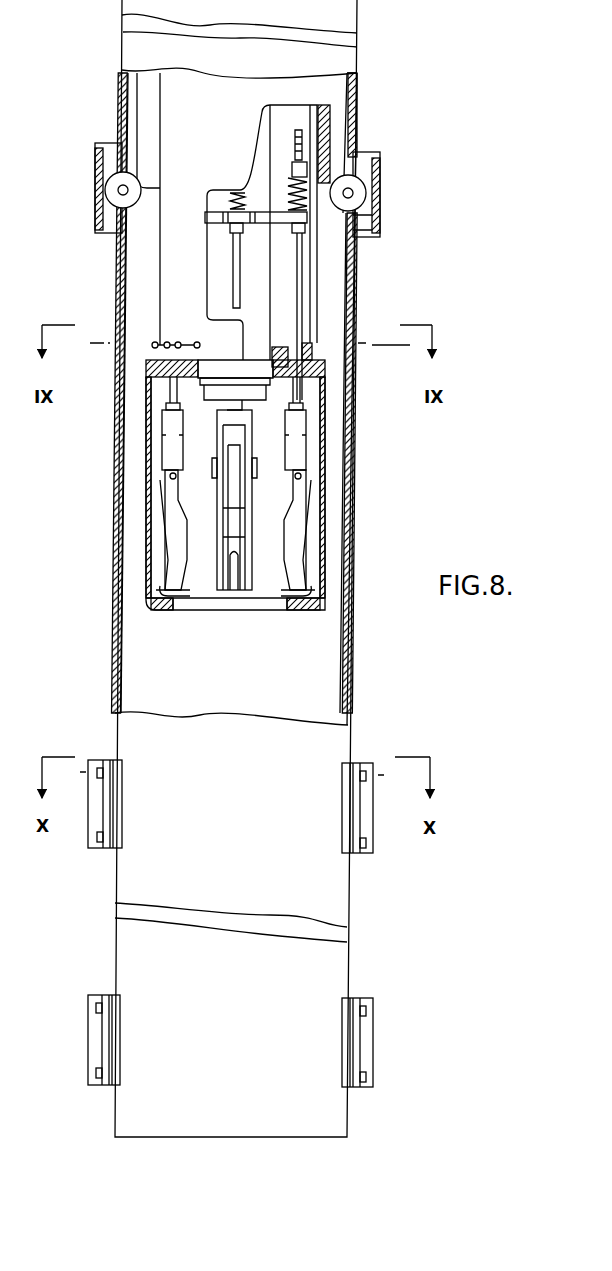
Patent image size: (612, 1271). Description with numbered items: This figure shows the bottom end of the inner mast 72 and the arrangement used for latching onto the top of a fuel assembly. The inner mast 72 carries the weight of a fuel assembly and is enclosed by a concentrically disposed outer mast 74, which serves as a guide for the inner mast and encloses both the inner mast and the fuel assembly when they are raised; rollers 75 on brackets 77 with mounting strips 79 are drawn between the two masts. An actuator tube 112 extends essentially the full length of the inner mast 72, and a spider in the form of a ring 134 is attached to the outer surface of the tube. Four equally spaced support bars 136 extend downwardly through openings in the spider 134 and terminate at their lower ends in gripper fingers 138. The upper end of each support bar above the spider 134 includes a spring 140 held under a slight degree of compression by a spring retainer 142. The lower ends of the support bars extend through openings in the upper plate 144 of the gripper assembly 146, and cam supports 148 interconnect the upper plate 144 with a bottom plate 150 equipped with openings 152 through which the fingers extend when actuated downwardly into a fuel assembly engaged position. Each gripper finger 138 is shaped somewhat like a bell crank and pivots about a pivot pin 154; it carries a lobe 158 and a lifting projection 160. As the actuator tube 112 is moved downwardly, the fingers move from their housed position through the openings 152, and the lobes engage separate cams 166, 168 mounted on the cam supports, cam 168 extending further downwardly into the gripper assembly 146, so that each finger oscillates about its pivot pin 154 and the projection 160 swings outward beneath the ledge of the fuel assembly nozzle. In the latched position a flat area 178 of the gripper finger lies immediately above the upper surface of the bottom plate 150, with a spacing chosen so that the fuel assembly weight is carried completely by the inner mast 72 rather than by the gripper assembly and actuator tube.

The inner mast 72 is at (150, 246).
The outer mast 74 is at (119, 283).
The roller 75 is at (363, 188).
The roller bracket 77 is at (377, 158).
The bracket mounting strip 79 is at (380, 200).
The actuator tube 112 is at (272, 123).
The spider 134 is at (303, 220).
The support bars 136 is at (297, 280).
The gripper fingers 138 is at (160, 560).
The spring 140 is at (370, 217).
The spring retainer 142 is at (303, 167).
The upper plate 144 is at (323, 366).
The gripper assembly 146 is at (335, 448).
The cam supports 148 is at (323, 465).
The bottom plate 150 is at (318, 612).
The openings 152 is at (283, 607).
The pivot pin 154 is at (157, 470).
The lobe 158 is at (162, 500).
The lifting projection 160 is at (195, 600).
The cam 166 is at (160, 432).
The cam 168 is at (143, 568).
The flat area 178 is at (162, 517).